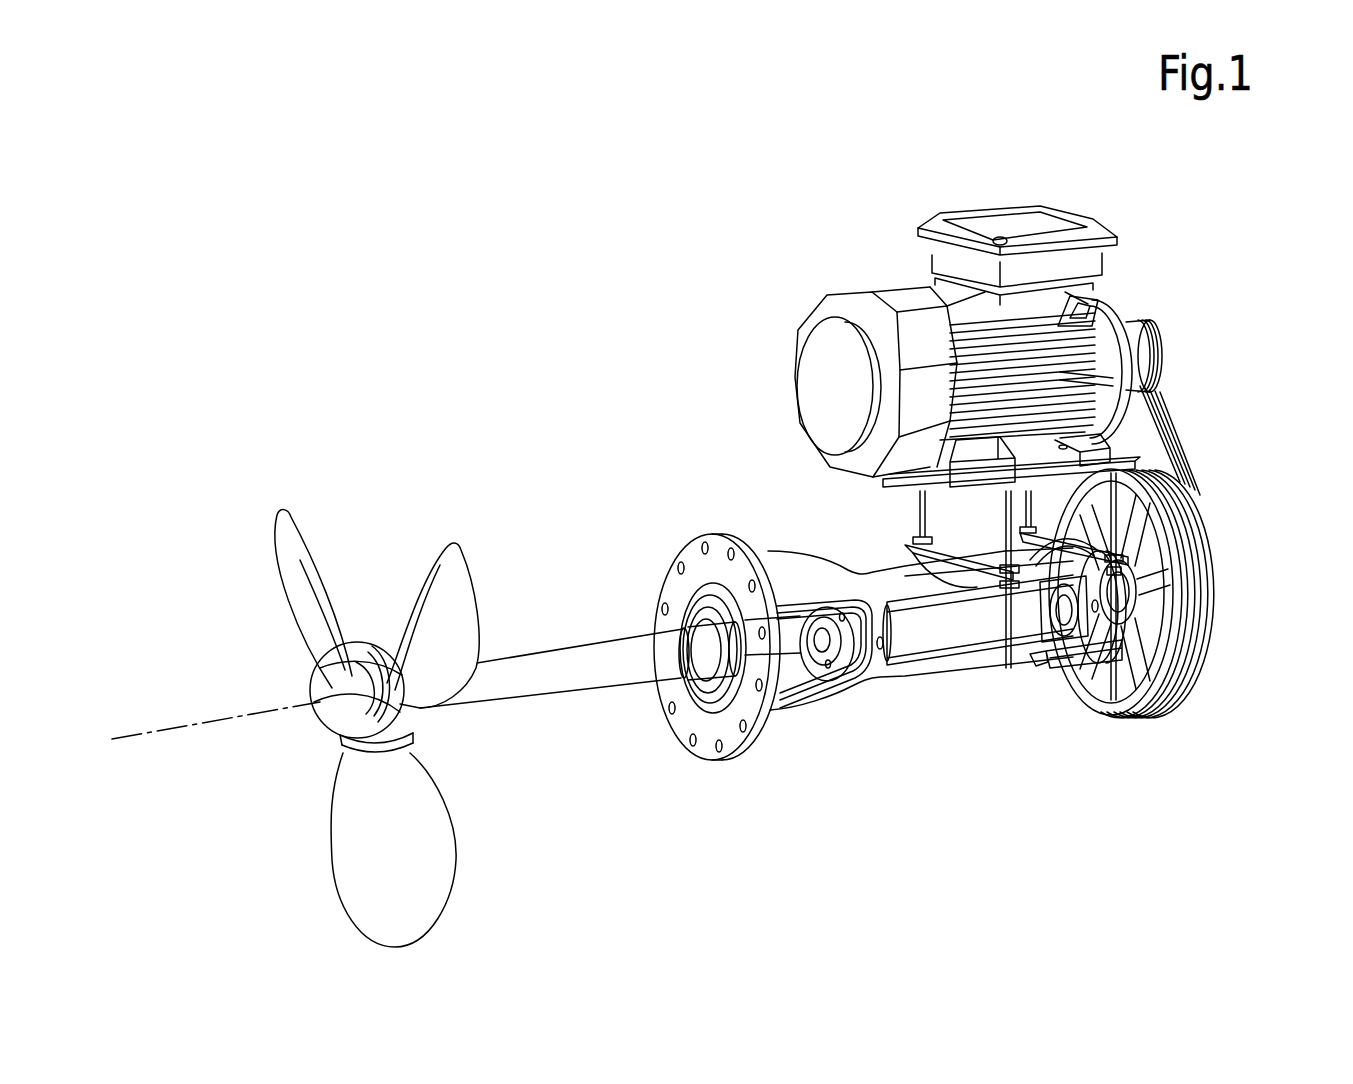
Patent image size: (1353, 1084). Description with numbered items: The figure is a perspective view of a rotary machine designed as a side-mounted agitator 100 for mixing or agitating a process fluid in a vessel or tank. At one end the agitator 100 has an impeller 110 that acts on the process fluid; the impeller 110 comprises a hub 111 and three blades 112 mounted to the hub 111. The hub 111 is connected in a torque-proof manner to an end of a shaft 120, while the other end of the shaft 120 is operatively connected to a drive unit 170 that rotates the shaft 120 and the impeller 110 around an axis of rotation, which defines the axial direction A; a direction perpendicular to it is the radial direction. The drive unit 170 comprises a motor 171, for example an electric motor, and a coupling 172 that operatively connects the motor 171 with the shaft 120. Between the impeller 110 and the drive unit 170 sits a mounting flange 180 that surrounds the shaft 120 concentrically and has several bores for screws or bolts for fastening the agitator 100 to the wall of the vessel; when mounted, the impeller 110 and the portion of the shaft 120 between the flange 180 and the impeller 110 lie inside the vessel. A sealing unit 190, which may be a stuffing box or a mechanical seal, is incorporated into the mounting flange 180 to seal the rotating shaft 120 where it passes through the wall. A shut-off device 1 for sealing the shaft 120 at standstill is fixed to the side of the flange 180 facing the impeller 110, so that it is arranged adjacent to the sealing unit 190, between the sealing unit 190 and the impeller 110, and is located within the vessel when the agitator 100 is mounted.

The shut-off device 1 is at (708, 615).
The agitator 100 is at (815, 153).
The impeller 110 is at (349, 558).
The hub 111 is at (345, 720).
The blades 112 is at (300, 598).
The shaft 120 is at (583, 644).
The drive unit 170 is at (1188, 388).
The motor 171 is at (820, 338).
The coupling 172 is at (1195, 506).
The mounting flange 180 is at (719, 746).
The sealing unit 190 is at (793, 622).
The axial direction A is at (193, 724).